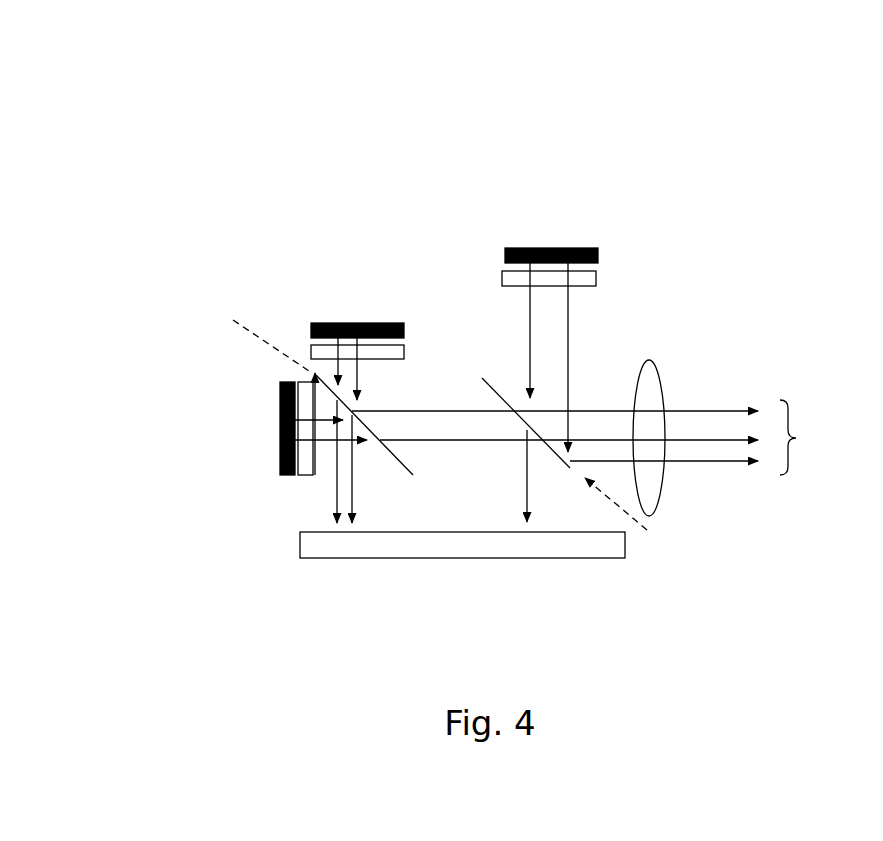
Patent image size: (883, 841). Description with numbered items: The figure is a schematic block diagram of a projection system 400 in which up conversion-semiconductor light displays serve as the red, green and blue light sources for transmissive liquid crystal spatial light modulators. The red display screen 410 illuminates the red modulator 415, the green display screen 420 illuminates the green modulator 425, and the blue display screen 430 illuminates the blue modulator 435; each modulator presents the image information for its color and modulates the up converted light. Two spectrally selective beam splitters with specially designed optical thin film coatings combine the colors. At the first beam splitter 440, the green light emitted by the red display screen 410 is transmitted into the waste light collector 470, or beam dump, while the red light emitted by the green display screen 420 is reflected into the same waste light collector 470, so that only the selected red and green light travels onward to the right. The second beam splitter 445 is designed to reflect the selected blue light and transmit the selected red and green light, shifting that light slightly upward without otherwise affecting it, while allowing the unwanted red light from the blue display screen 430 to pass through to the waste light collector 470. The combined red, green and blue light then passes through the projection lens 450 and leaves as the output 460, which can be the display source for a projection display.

The projection system 400 is at (260, 152).
The red display screen 410 is at (370, 320).
The red modulator 415 is at (308, 347).
The green display screen 420 is at (277, 433).
The green modulator 425 is at (305, 475).
The blue display screen 430 is at (542, 247).
The blue modulator 435 is at (600, 280).
The beamsplitter 440 is at (296, 409).
The beamsplitter 445 is at (589, 470).
The lens 450 is at (669, 382).
The output 460 is at (598, 437).
The waste light collector 470 is at (440, 550).